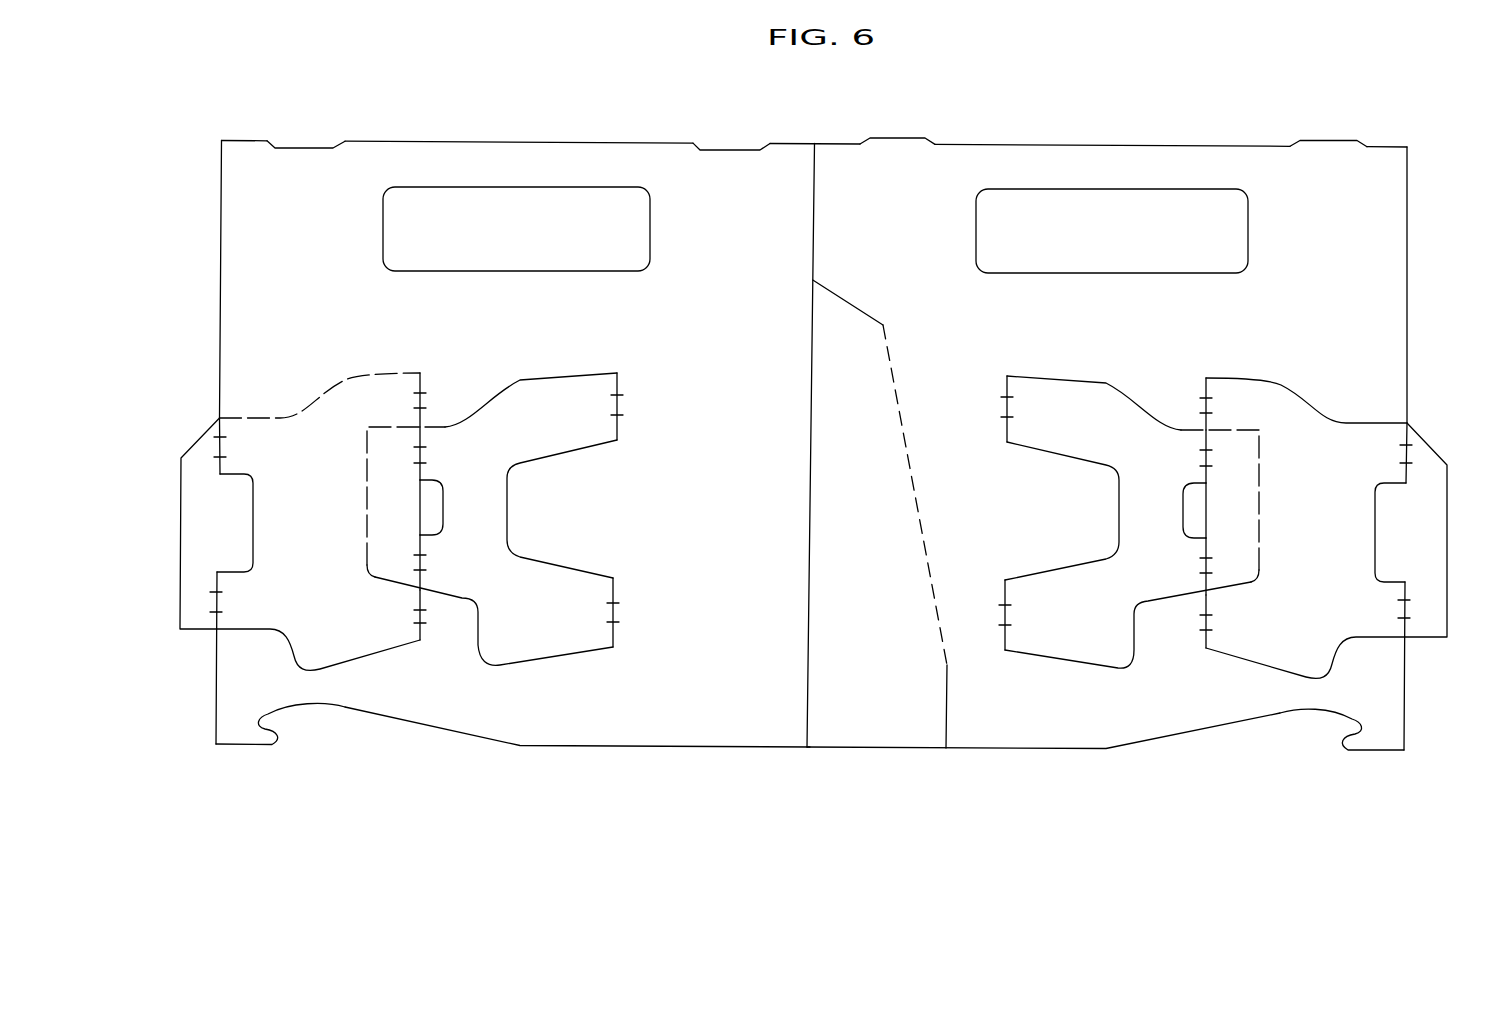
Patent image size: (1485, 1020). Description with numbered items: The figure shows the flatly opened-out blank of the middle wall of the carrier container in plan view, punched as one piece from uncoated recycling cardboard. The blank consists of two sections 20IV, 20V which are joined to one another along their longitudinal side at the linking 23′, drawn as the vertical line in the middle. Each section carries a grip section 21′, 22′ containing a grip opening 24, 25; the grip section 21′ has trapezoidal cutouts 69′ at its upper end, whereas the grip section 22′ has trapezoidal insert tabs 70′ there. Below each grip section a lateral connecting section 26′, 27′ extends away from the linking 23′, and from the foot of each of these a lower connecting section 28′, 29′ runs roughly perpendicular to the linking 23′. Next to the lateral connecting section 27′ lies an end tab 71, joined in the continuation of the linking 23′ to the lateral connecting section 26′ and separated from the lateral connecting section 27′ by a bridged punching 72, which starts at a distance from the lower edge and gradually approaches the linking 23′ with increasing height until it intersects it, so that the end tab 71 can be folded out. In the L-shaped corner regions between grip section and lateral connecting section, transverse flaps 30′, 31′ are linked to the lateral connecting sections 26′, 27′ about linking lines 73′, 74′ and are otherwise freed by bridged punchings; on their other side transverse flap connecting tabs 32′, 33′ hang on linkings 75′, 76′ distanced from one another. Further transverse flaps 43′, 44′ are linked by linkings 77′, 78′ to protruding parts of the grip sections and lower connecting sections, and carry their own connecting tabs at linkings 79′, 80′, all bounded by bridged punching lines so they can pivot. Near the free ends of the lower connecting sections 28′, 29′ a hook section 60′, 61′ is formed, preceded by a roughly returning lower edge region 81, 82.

The section 20IV is at (247, 175).
The section 20V is at (1395, 180).
The trapezoidal cutout 69′ is at (304, 141).
The trapezoidal insert tab 70′ is at (905, 138).
The grip opening 24 is at (383, 228).
The grip opening 25 is at (1248, 230).
The grip section 21′ is at (734, 235).
The grip section 22′ is at (921, 235).
The linking 23′ is at (814, 228).
The bridged punching 72 is at (932, 577).
The end tab 71 is at (864, 592).
The lateral connecting section 26′ is at (716, 494).
The lateral connecting section 27′ is at (971, 490).
The lower connecting section 28′ is at (577, 719).
The lower connecting section 29′ is at (1043, 720).
The transverse flap 43′ is at (300, 406).
The transverse flap 44′ is at (1306, 455).
The transverse flap connecting tab 32′ is at (406, 502).
The transverse flap connecting tab 33′ is at (1220, 506).
The transverse flap 30′ is at (496, 519).
The transverse flap 31′ is at (1128, 522).
The linking line 73′ is at (617, 428).
The linking line 74′ is at (1007, 382).
The linking 75′ is at (420, 455).
The linking 76′ is at (1206, 460).
The linking 77′ is at (420, 405).
The linking 78′ is at (1206, 408).
The linking 79′ is at (222, 448).
The linking 80′ is at (1406, 448).
The hook section 60′ is at (273, 745).
The hook section 61′ is at (1350, 750).
The returning lower edge region 81 is at (378, 721).
The returning lower edge region 82 is at (1208, 732).